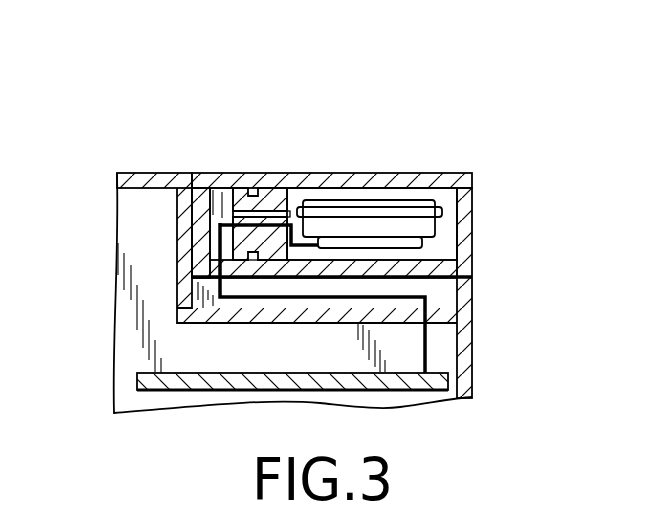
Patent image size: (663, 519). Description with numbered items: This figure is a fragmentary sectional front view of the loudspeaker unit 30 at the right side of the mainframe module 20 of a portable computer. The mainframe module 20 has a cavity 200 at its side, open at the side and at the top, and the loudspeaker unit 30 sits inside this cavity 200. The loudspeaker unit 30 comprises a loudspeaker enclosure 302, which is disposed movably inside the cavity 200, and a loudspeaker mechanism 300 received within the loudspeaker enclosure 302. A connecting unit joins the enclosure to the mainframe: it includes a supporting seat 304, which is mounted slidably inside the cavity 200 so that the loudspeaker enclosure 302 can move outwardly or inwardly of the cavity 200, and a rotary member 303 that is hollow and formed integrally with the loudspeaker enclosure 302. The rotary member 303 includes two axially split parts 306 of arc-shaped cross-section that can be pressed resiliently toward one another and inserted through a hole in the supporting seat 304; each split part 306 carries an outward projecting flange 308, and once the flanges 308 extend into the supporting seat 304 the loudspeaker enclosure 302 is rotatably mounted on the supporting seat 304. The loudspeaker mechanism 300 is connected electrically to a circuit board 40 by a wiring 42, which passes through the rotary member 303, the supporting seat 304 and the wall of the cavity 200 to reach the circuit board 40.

The mainframe module 20 is at (116, 173).
The loudspeaker unit 30 is at (487, 150).
The loudspeaker enclosure 302 is at (473, 197).
The supporting seat 304 is at (202, 228).
The cavity 200 is at (205, 178).
The rotary member 303 is at (363, 82).
The flange 308 is at (248, 190).
The split part 306 is at (265, 200).
The loudspeaker mechanism 300 is at (419, 212).
The wiring 42 is at (300, 300).
The circuit board 40 is at (437, 380).